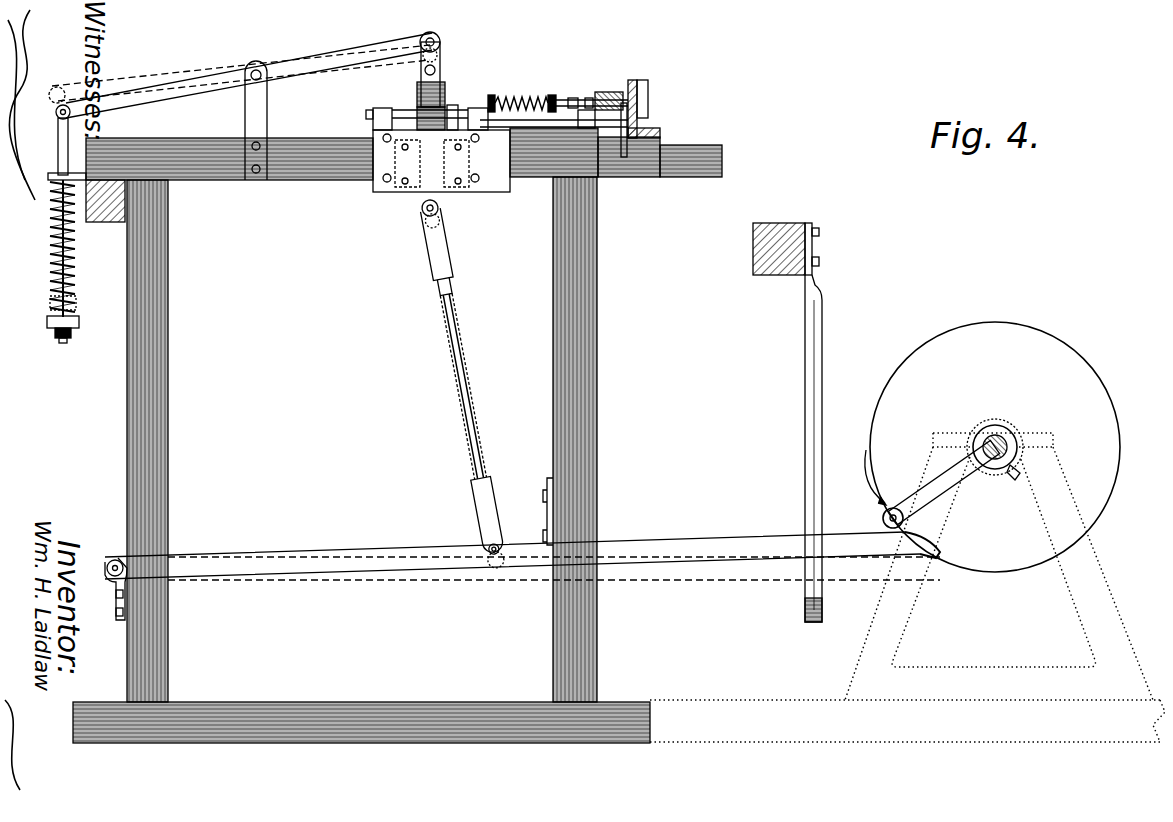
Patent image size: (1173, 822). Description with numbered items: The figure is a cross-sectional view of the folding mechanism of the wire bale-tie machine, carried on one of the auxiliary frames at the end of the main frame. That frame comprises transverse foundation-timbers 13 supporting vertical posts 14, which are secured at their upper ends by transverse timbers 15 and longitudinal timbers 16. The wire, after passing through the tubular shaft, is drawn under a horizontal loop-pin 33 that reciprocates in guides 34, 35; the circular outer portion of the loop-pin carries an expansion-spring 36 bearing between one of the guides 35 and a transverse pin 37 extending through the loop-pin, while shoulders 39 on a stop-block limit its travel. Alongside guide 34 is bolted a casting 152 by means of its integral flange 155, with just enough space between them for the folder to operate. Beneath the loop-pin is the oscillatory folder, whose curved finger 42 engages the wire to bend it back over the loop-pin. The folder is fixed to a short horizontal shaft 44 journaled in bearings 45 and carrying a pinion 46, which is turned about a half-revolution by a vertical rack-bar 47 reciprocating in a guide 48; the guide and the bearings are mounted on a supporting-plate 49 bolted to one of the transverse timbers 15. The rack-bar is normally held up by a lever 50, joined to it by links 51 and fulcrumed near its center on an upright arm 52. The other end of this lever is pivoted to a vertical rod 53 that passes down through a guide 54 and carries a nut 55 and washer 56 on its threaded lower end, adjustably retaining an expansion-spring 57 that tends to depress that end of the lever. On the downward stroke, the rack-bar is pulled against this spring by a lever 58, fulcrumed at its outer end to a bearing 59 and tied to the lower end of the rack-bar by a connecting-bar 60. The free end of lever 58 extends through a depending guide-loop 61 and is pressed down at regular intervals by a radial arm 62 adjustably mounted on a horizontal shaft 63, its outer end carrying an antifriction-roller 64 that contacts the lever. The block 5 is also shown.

The bracket block 5 is at (787, 223).
The transverse foundation-timbers 13 is at (337, 702).
The vertical posts 14 is at (168, 450).
The transverse timbers 15 is at (404, 166).
The longitudinal timbers 16 is at (104, 222).
The loop-pin 33 is at (630, 82).
The guide 34 is at (605, 88).
The guide 35 is at (492, 95).
The expansion-spring 36 is at (530, 97).
The transverse pin 37 is at (556, 98).
The shoulders 39 is at (586, 97).
The curved finger 42 is at (626, 157).
The short horizontal shaft 44 is at (528, 125).
The bearings 45 is at (368, 115).
The pinion 46 is at (422, 118).
The vertical rack-bar 47 is at (446, 88).
The guide 48 is at (420, 118).
The supporting-plate 49 is at (510, 192).
The lever 50 is at (315, 60).
The links 51 is at (441, 60).
The upright arm 52 is at (245, 118).
The vertical rod 53 is at (76, 261).
The guide 54 is at (58, 168).
The nut 55 is at (76, 343).
The washer 56 is at (79, 322).
The expansion-spring 57 is at (76, 292).
The lever 58 is at (430, 555).
The bearing 59 is at (115, 560).
The connecting-bar 60 is at (462, 396).
The depending guide-loop 61 is at (805, 480).
The radial arm 62 is at (921, 488).
The horizontal shaft 63 is at (543, 532).
The antifriction-roller 64 is at (882, 515).
The casting 152 is at (648, 85).
The integral flange 155 is at (655, 134).